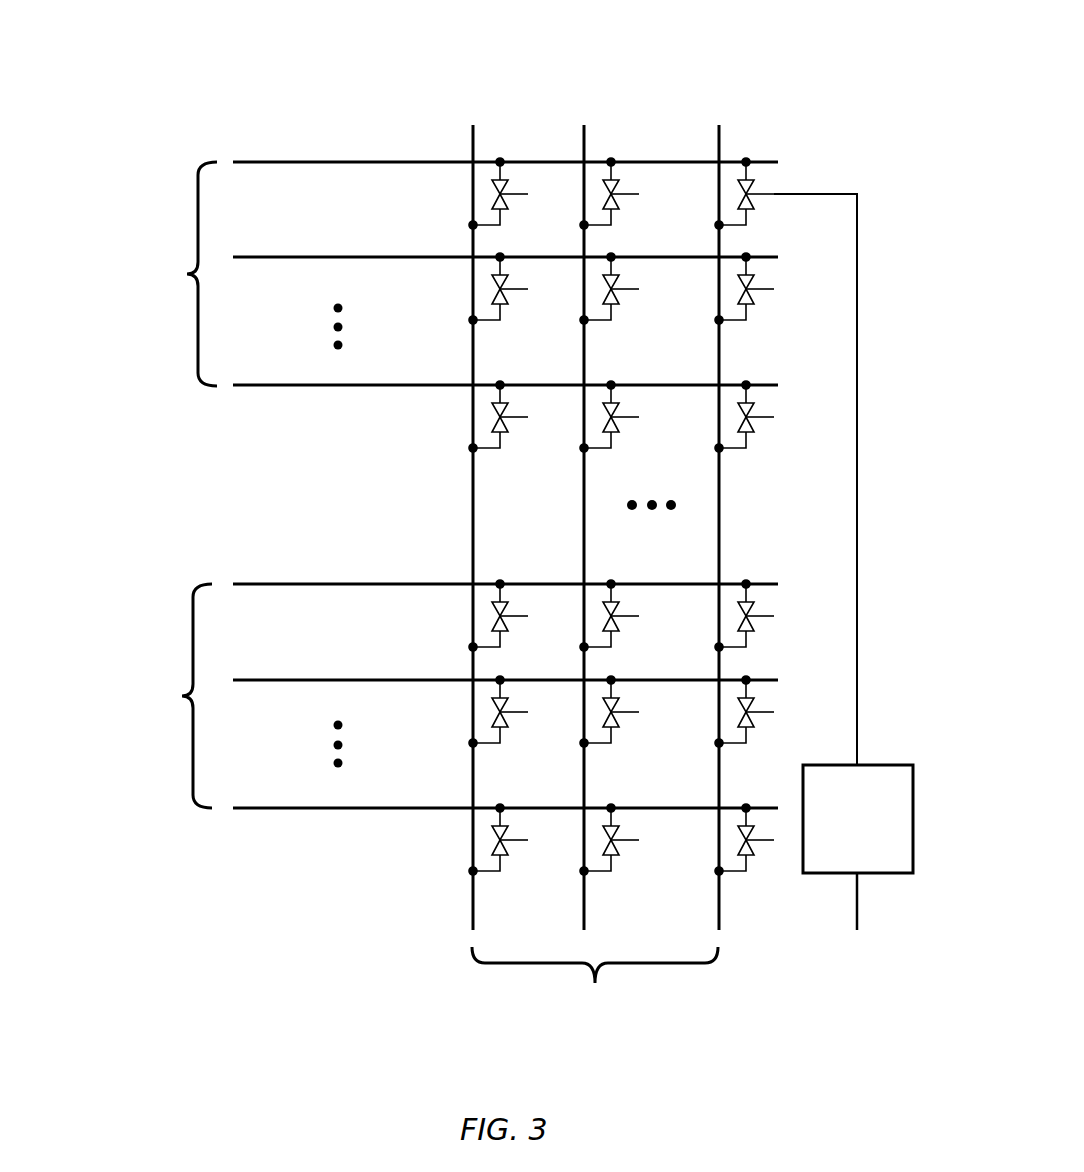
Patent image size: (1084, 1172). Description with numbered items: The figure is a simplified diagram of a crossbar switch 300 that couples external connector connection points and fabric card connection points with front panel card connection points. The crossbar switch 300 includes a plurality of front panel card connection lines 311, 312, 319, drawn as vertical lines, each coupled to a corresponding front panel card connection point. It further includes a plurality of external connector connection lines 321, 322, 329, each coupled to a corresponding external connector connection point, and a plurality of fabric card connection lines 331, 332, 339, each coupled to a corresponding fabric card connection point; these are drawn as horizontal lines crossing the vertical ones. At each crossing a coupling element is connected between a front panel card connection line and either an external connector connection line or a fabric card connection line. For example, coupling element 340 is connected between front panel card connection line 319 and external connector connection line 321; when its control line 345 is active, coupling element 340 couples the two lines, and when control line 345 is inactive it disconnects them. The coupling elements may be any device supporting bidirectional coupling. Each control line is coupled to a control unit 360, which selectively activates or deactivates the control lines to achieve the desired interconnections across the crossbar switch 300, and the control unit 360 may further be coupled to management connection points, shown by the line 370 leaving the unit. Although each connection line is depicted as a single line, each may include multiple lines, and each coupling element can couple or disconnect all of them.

The crossbar switch 300 is at (284, 62).
The front panel card connection line 311 is at (472, 127).
The front panel card connection line 312 is at (583, 127).
The front panel card connection line 319 is at (718, 127).
The external connector connection line 321 is at (326, 160).
The external connector connection line 322 is at (326, 255).
The external connector connection line 329 is at (326, 383).
The fabric card connection line 331 is at (326, 582).
The fabric card connection line 332 is at (326, 678).
The fabric card connection line 339 is at (326, 806).
The coupling element 340 is at (752, 205).
The control line 345 is at (798, 193).
The control unit 360 is at (858, 819).
The management connection line 370 is at (857, 903).